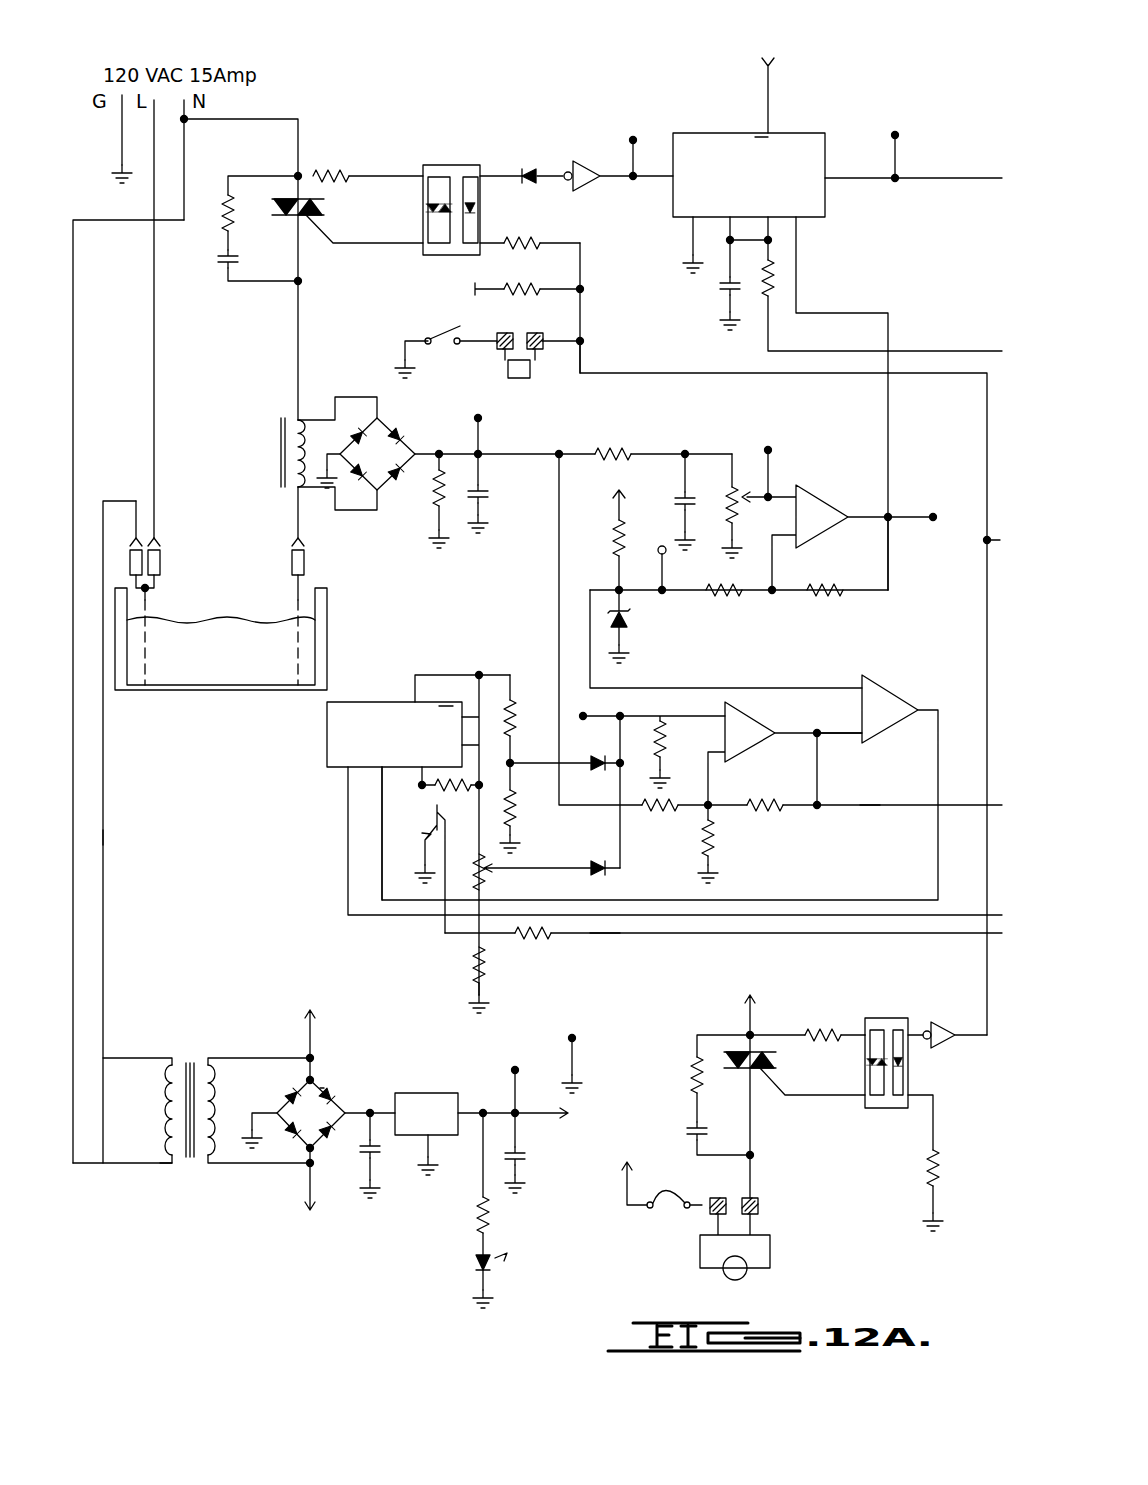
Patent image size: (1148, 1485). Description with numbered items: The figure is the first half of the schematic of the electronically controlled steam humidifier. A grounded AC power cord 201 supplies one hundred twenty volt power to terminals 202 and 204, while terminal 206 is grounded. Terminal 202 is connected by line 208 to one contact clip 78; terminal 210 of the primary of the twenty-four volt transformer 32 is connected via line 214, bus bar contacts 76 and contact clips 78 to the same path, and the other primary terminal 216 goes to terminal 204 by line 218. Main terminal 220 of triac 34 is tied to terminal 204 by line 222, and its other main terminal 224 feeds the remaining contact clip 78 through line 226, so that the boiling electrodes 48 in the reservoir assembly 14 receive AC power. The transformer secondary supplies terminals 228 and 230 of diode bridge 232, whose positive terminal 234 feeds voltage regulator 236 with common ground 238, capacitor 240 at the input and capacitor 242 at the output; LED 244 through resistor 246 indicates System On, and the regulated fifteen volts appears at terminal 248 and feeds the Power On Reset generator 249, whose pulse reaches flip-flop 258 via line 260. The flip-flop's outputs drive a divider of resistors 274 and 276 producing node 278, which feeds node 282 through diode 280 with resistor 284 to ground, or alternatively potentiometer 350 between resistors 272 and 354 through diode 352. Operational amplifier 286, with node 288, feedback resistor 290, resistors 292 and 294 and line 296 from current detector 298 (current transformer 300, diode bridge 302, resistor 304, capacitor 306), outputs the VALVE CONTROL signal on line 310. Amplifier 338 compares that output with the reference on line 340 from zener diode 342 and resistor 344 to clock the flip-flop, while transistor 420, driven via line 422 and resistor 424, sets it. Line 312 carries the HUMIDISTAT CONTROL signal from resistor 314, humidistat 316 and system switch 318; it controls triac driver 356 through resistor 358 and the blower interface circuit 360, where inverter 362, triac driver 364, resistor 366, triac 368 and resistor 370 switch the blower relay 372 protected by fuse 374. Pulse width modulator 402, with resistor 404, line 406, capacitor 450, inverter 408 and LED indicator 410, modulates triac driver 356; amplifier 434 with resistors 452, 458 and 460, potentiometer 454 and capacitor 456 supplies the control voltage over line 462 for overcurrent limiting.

The reservoir assembly 14 is at (327, 598).
The 24 volt AC transformer 32 is at (250, 1050).
The triac 34 is at (326, 208).
The boiling electrodes 48 is at (150, 603).
The bus bar contacts 76 is at (149, 558).
The contact clips 78 is at (157, 533).
The AC power cord 201 is at (214, 37).
The terminal 202 is at (176, 120).
The terminal 204 is at (196, 87).
The terminal 206 is at (130, 80).
The line 208 is at (154, 402).
The terminal of primary winding 210 is at (225, 1053).
The line 214 is at (103, 837).
The end terminal of primary winding 216 is at (170, 1165).
The line 218 is at (73, 1110).
The main terminal of triac 220 is at (298, 176).
The line 222 is at (301, 119).
The main terminal of triac 224 is at (292, 284).
The line 226 is at (298, 358).
The terminal 228 is at (313, 1053).
The terminal 230 is at (305, 1168).
The diode bridge 232 is at (318, 1088).
The positive terminal of diode bridge 234 is at (353, 1109).
The voltage regulator 236 is at (428, 1092).
The common ground 238 is at (431, 1152).
The capacitor 240 is at (378, 1160).
The capacitor 242 is at (533, 1150).
The LED 244 is at (478, 1263).
The resistor 246 is at (490, 1200).
The output terminal 248 is at (768, 64).
The Power On Reset Signal Generator 249 is at (615, 502).
The type D flip-flop 258 is at (327, 735).
The line 260 is at (348, 848).
The resistor 272 is at (440, 810).
The resistor 274 is at (513, 717).
The resistor 276 is at (510, 820).
The node 278 is at (511, 762).
The diode 280 is at (596, 772).
The node 282 is at (663, 722).
The resistor 284 is at (667, 772).
The operational amplifier 286 is at (772, 734).
The node 288 is at (708, 813).
The resistor 290 is at (764, 797).
The resistor 292 is at (713, 850).
The resistor 294 is at (670, 818).
The line 296 is at (527, 447).
The current detector circuit 298 is at (440, 419).
The current transformer 300 is at (280, 452).
The diode bridge 302 is at (375, 425).
The resistor 304 is at (435, 488).
The capacitor 306 is at (490, 490).
The line 310 is at (868, 805).
The line 312 is at (595, 373).
The resistor 314 is at (525, 287).
The humidistat 316 is at (530, 373).
The system switch 318 is at (443, 347).
The operational amplifier 338 is at (897, 680).
The line 340 is at (704, 688).
The zener diode 342 is at (626, 628).
The resistor 344 is at (603, 555).
The potentiometer 350 is at (491, 876).
The diode 352 is at (604, 876).
The resistor 354 is at (474, 965).
The triac driver 356 is at (445, 165).
The resistor 358 is at (522, 237).
The blower interface circuit 360 is at (857, 996).
The inverter 362 is at (940, 1000).
The triac driver 364 is at (880, 1110).
The resistor 366 is at (926, 1178).
The triac 368 is at (758, 1080).
The resistor 370 is at (815, 1035).
The blower relay 372 is at (728, 1278).
The fuse 374 is at (660, 1207).
The pulse width modulator 402 is at (798, 132).
The resistor 404 is at (778, 283).
The line 406 is at (793, 350).
The inverter 408 is at (594, 190).
The LED indicator 410 is at (529, 167).
The transistor 420 is at (433, 817).
The line 422 is at (600, 934).
The resistor 424 is at (535, 937).
The operational amplifier 434 is at (820, 494).
The capacitor 450 is at (718, 284).
The resistor 452 is at (614, 445).
The maximum current potentiometer 454 is at (743, 480).
The capacitor 456 is at (675, 490).
The resistor 458 is at (735, 597).
The resistor 460 is at (835, 598).
The line 462 is at (888, 452).